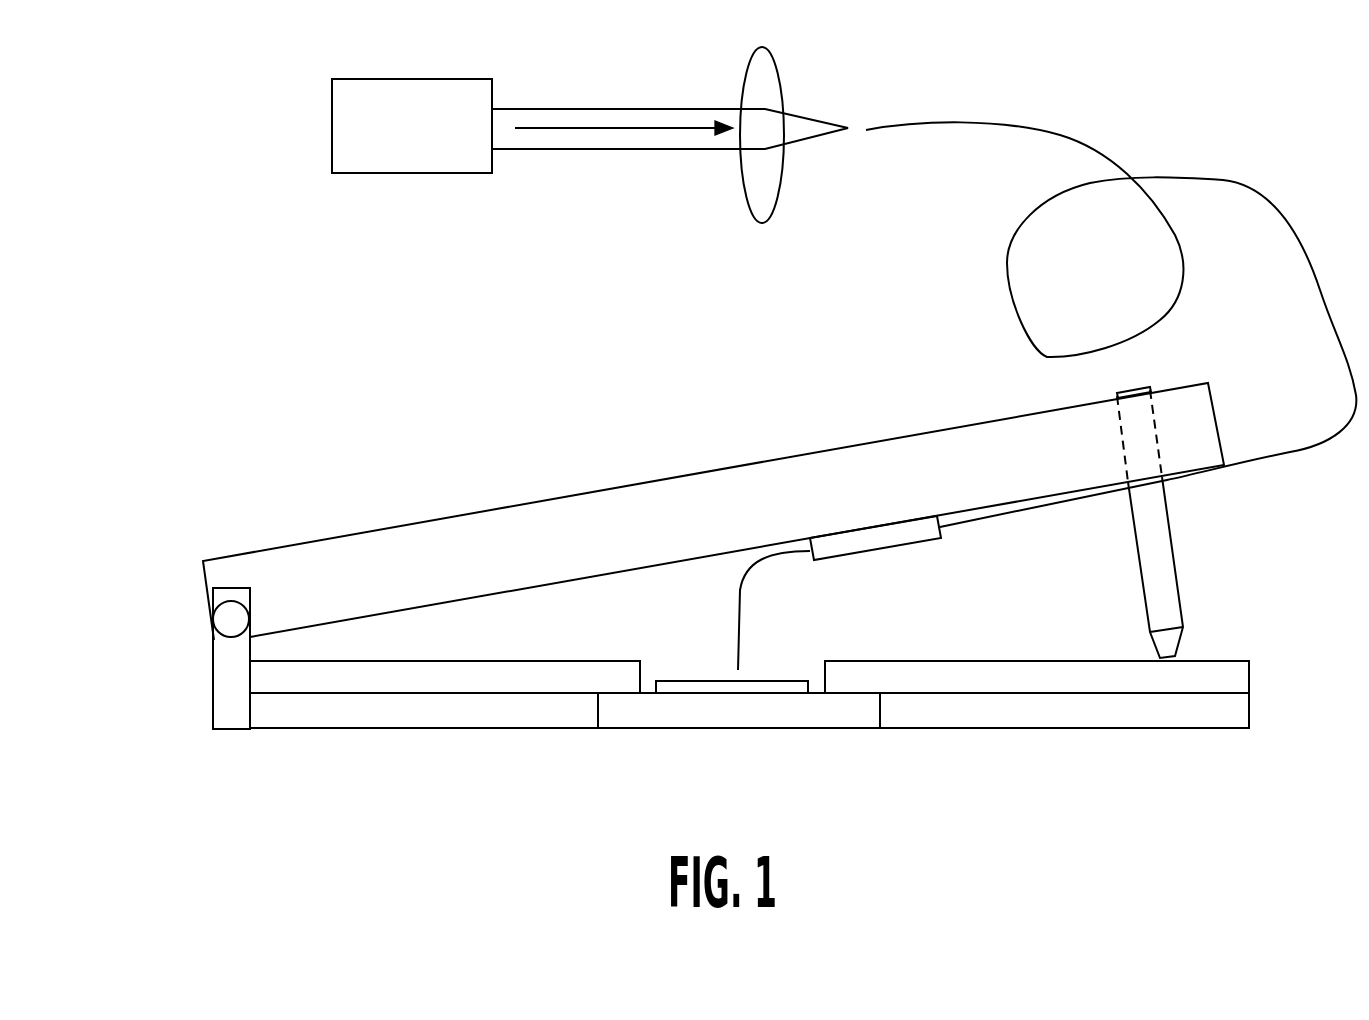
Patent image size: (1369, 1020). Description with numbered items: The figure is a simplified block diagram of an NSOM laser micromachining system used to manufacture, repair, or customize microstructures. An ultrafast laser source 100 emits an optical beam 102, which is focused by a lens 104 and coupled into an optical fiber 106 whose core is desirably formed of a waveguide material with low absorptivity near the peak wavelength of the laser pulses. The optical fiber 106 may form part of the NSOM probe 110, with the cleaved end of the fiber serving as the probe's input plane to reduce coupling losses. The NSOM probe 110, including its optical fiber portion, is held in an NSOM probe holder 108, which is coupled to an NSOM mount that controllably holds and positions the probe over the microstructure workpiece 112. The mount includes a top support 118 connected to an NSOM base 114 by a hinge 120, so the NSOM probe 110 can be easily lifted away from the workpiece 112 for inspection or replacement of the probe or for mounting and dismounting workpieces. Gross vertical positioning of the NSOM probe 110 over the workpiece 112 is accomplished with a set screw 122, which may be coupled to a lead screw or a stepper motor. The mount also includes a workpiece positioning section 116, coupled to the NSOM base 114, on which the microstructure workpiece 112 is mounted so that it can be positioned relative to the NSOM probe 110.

The ultrafast laser source 100 is at (332, 135).
The optical beam 102 is at (603, 120).
The lens 104 is at (781, 77).
The optical fiber 106 is at (1173, 173).
The NSOM probe holder 108 is at (833, 533).
The NSOM probe 110 is at (735, 632).
The microstructure workpiece 112 is at (695, 688).
The NSOM base 114 is at (521, 710).
The workpiece positioning section 116 is at (820, 710).
The top support 118 is at (638, 482).
The hinge 120 is at (232, 620).
The set screw 122 is at (1122, 440).